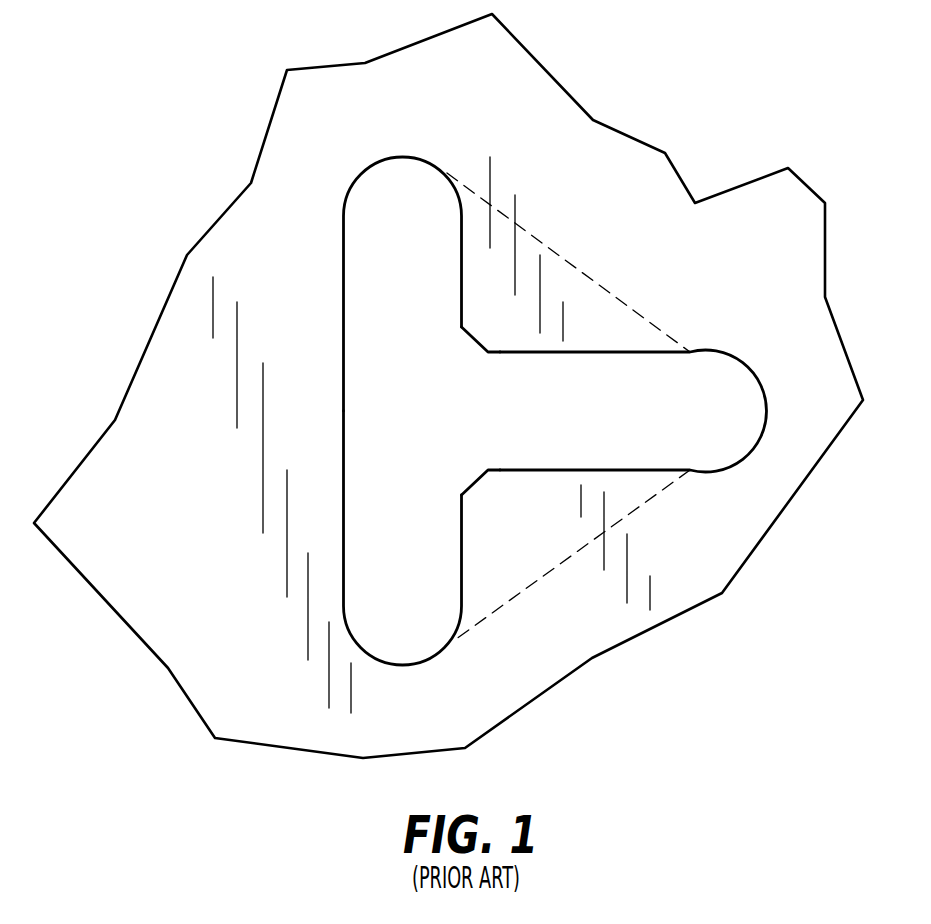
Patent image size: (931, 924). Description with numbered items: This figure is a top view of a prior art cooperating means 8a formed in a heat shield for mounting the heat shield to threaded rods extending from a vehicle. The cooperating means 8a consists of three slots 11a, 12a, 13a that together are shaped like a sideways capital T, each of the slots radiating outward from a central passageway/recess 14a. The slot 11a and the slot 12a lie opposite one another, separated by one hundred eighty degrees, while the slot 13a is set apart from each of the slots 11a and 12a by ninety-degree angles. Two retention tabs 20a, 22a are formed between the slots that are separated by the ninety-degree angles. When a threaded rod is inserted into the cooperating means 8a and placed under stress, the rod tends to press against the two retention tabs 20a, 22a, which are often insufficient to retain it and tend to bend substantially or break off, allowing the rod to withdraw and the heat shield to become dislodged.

The cooperating means 8a is at (210, 108).
The slot 11a is at (402, 194).
The slot 12a is at (400, 630).
The slot 13a is at (690, 415).
The central passageway/recess 14a is at (475, 340).
The retention tab 20a is at (585, 310).
The retention tab 22a is at (528, 543).